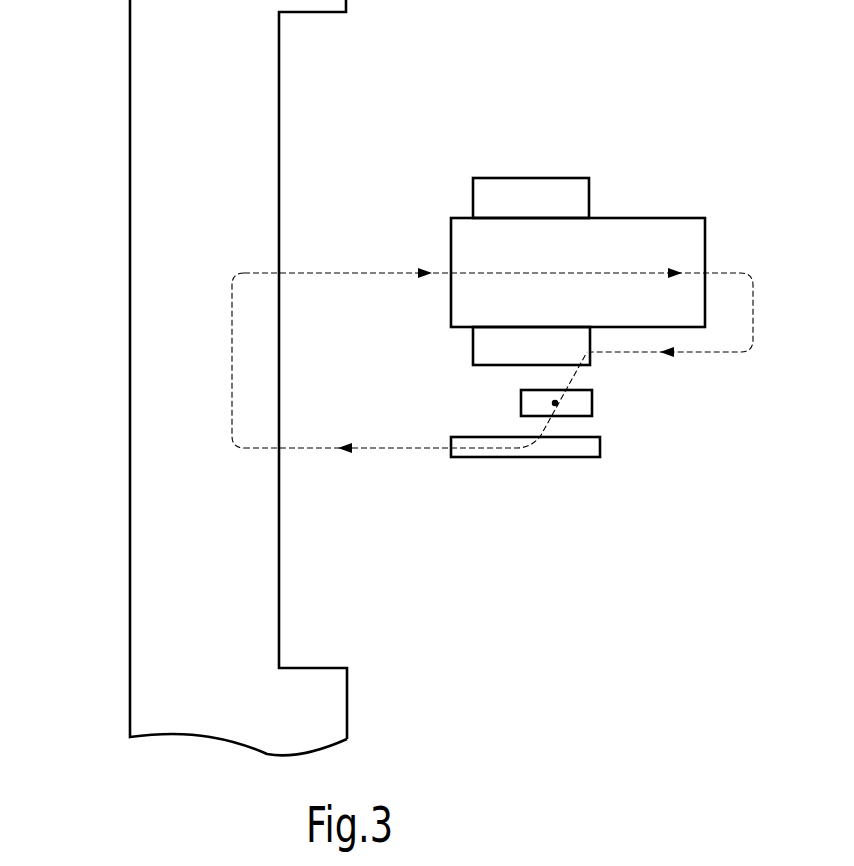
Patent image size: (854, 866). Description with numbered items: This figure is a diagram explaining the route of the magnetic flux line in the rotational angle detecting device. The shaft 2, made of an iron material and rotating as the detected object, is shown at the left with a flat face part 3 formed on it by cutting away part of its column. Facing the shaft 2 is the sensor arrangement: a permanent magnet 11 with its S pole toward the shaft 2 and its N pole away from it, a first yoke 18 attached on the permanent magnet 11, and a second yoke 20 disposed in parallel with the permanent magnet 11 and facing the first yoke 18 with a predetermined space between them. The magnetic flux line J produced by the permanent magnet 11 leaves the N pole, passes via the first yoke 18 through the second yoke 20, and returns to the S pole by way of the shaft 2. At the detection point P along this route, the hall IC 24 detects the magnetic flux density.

The shaft 2 is at (150, 69).
The flat face part 3 is at (281, 97).
The permanent magnet 11 is at (675, 217).
The first yoke 18 is at (474, 352).
The second yoke 20 is at (600, 450).
The hall IC 24 is at (592, 413).
The detection point P is at (557, 403).
The magnetic flux line J is at (754, 348).